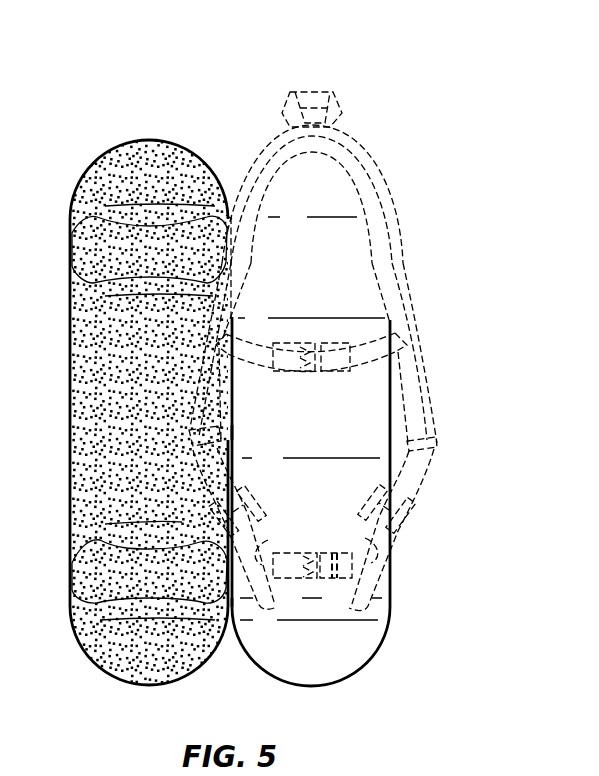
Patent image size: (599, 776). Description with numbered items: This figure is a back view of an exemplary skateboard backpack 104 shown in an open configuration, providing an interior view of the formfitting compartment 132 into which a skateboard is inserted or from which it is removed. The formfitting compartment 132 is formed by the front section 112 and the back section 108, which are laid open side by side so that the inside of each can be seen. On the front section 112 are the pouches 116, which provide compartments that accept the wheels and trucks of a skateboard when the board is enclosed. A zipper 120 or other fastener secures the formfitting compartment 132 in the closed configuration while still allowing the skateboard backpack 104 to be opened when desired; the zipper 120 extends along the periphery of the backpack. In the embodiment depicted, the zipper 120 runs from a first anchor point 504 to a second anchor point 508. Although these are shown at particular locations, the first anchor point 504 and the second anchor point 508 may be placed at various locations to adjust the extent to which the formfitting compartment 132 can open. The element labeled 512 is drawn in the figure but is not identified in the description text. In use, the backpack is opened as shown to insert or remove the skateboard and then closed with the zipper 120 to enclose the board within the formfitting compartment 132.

The skateboard backpack 104 is at (262, 47).
The back section 108 is at (384, 636).
The front section 112 is at (100, 668).
The pouches 116 is at (93, 222).
The zipper 120 is at (71, 325).
The formfitting compartment 132 is at (214, 140).
The first anchor point 504 is at (227, 217).
The second anchor point 508 is at (232, 607).
The pouch side wall 512 is at (233, 432).